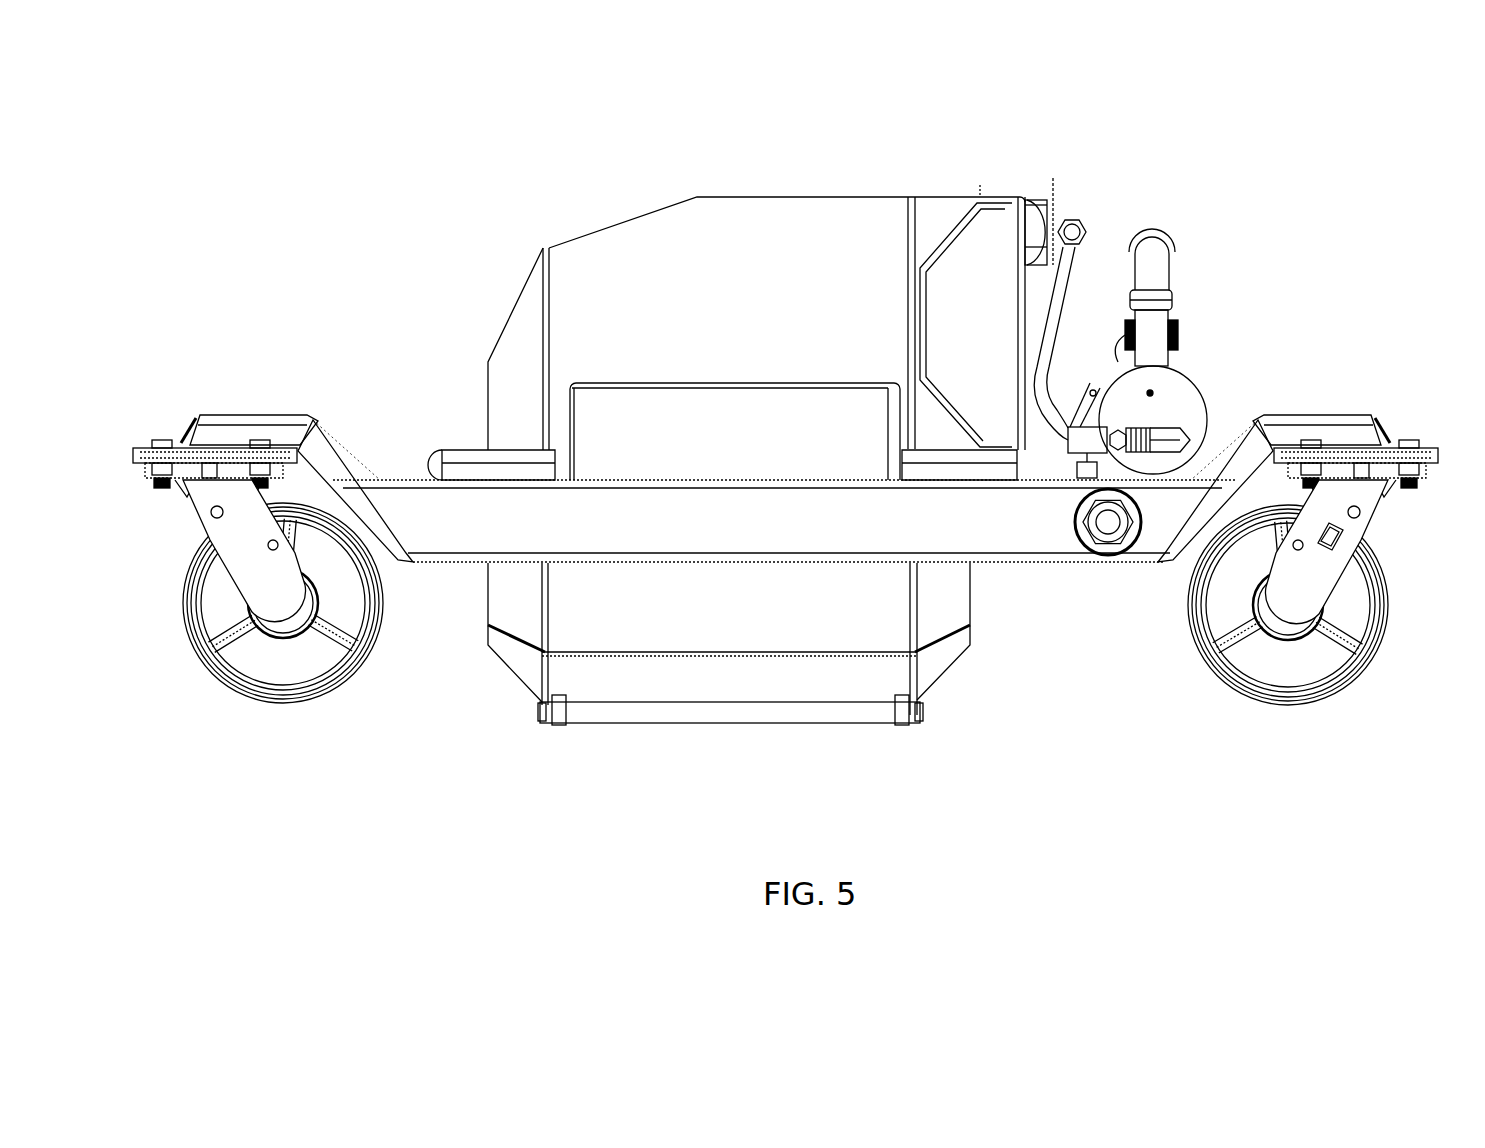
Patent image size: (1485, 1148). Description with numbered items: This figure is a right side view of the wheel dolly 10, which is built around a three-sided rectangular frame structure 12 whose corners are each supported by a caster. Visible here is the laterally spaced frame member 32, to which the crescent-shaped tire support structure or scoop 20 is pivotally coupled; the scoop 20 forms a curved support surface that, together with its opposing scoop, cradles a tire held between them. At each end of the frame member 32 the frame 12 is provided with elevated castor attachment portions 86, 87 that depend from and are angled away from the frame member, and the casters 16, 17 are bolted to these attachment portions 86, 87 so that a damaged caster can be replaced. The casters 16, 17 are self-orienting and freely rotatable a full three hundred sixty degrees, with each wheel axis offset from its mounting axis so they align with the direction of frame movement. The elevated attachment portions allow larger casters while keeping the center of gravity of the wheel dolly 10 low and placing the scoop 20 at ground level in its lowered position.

The wheel dolly 10 is at (1115, 198).
The frame structure 12 is at (1058, 585).
The caster 16 is at (1302, 715).
The caster 17 is at (357, 692).
The tire support structure or scoop 20 is at (752, 207).
The frame member 32 is at (1027, 538).
The castor attachment portion 86 is at (1330, 430).
The castor attachment portion 87 is at (245, 418).